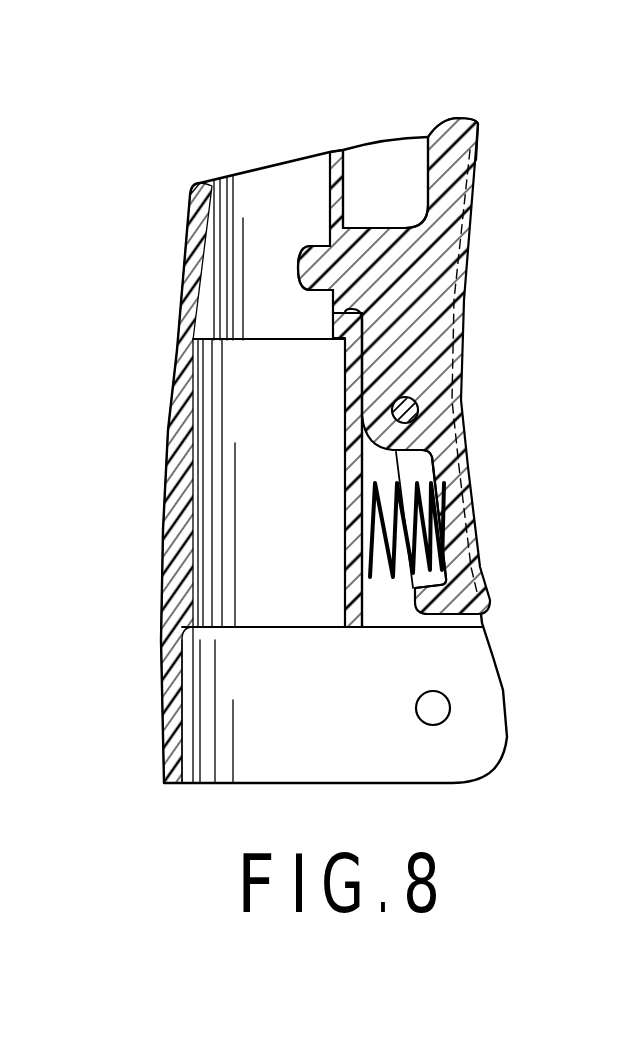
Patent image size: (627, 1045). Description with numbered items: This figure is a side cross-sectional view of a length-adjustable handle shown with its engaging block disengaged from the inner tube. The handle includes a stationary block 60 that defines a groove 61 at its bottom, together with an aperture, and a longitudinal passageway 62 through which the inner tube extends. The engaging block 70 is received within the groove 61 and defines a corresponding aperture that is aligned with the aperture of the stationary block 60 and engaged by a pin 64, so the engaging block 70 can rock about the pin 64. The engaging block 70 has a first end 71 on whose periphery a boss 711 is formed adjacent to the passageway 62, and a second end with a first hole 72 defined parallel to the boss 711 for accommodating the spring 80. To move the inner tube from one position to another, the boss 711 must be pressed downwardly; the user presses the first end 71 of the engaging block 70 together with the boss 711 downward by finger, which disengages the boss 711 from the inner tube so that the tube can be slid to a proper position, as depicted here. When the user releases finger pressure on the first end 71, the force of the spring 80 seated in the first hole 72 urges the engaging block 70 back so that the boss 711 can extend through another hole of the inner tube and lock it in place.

The stationary block 60 is at (165, 528).
The groove 61 is at (392, 173).
The longitudinal passageway 62 is at (217, 383).
The pin 64 is at (418, 407).
The engaging block 70 is at (430, 267).
The first end 71 is at (468, 120).
The boss 711 is at (302, 270).
The first hole 72 is at (418, 463).
The spring 80 is at (367, 540).